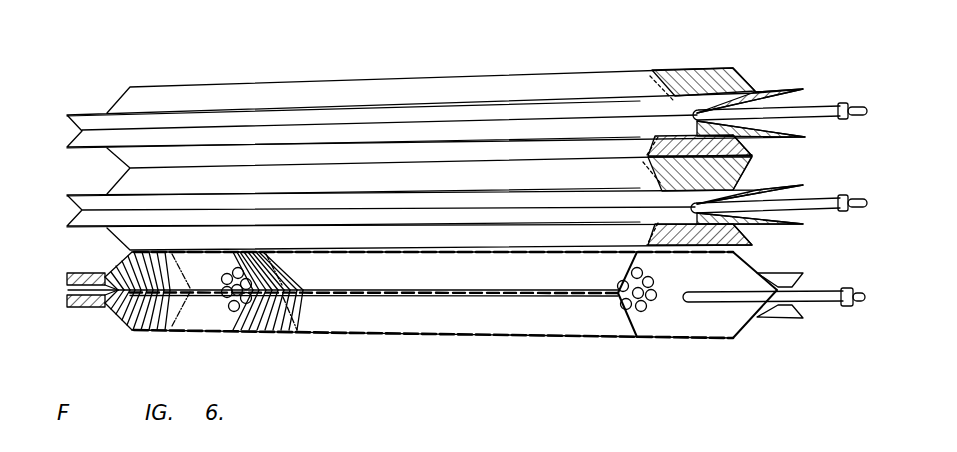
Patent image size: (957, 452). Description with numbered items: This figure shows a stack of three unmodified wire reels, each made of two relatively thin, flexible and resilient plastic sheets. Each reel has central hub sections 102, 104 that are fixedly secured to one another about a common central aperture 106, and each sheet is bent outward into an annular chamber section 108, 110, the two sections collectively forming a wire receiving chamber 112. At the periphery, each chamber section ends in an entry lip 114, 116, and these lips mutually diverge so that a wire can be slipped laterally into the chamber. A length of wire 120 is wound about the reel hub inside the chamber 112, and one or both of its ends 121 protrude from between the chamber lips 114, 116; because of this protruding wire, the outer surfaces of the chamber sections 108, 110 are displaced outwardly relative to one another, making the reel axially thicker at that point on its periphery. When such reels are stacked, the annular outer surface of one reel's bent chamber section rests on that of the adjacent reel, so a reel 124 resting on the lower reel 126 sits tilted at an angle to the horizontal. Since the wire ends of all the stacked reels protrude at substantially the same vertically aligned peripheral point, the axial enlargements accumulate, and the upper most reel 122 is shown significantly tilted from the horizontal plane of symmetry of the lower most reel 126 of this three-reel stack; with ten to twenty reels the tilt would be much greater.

The central hub section 102 is at (335, 297).
The central hub section 104 is at (334, 288).
The central aperture 106 is at (400, 289).
The annular chamber section 108 is at (202, 332).
The annular chamber section 110 is at (195, 251).
The wire receiving chamber 112 is at (188, 313).
The peripheral entry lip 114 is at (85, 310).
The peripheral entry lip 116 is at (80, 272).
The length of wire 120 is at (650, 305).
The wire end 121 is at (823, 303).
The upper most reel 122 is at (133, 86).
The reel 124 is at (114, 184).
The lower reel 126 is at (455, 306).